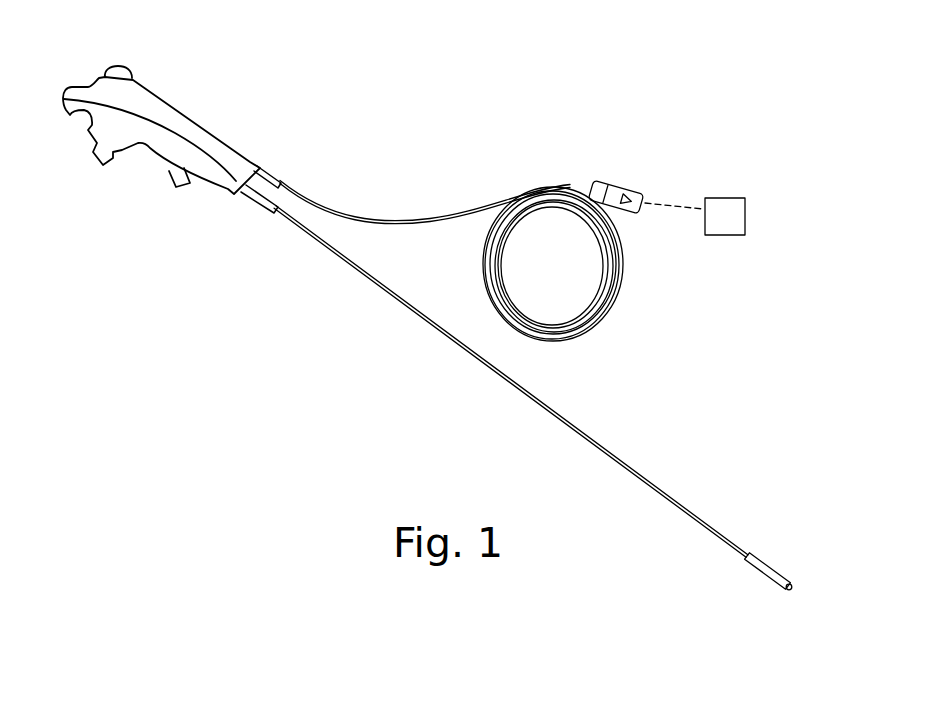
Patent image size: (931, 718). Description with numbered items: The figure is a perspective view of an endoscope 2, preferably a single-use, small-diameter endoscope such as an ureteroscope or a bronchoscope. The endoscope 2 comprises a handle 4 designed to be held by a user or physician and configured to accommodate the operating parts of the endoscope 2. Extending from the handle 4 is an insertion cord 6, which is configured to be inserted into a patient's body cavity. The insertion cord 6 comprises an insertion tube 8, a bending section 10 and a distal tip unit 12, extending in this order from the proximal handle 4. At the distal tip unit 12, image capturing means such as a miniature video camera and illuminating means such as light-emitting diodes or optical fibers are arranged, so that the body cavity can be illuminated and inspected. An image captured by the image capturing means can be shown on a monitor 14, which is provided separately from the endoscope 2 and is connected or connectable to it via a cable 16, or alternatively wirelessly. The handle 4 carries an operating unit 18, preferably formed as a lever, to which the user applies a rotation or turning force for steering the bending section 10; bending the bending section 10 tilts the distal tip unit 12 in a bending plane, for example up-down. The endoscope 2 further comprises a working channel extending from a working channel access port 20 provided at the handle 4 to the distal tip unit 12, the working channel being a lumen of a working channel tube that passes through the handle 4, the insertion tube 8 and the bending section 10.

The endoscope 2 is at (214, 113).
The handle 4 is at (153, 101).
The insertion cord 6 is at (561, 437).
The insertion tube 8 is at (422, 318).
The bending section 10 is at (760, 576).
The distal tip unit 12 is at (795, 590).
The monitor 14 is at (746, 212).
The cable 16 is at (378, 213).
The operating unit 18 is at (120, 67).
The working channel access port 20 is at (176, 188).